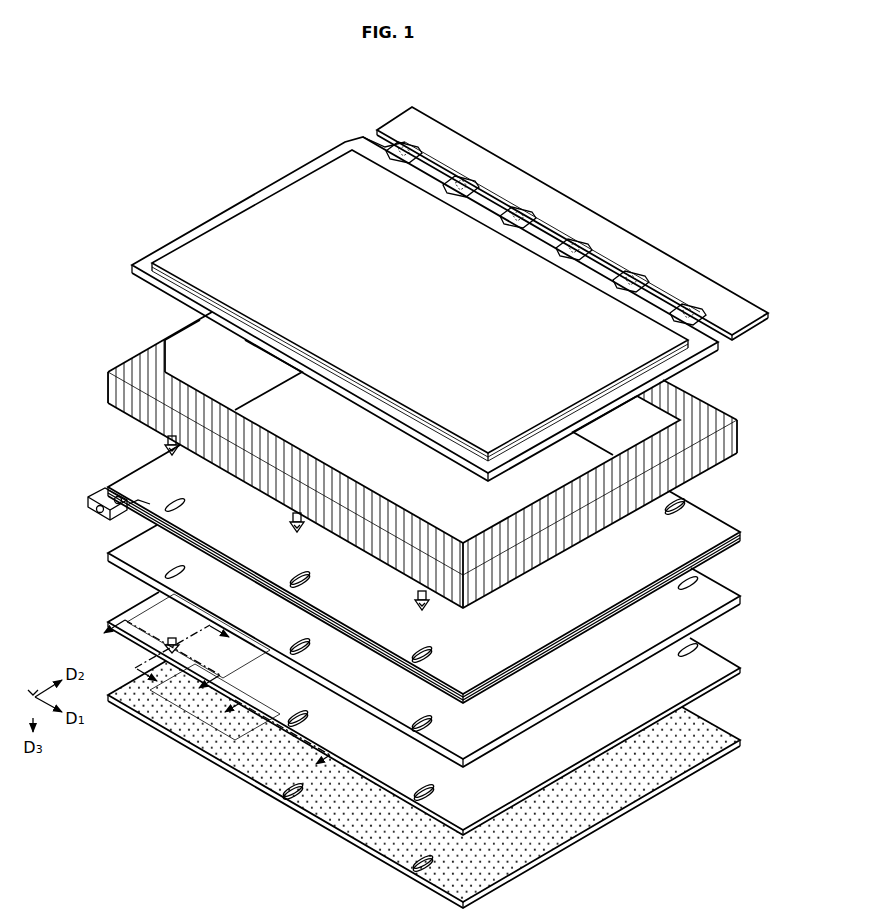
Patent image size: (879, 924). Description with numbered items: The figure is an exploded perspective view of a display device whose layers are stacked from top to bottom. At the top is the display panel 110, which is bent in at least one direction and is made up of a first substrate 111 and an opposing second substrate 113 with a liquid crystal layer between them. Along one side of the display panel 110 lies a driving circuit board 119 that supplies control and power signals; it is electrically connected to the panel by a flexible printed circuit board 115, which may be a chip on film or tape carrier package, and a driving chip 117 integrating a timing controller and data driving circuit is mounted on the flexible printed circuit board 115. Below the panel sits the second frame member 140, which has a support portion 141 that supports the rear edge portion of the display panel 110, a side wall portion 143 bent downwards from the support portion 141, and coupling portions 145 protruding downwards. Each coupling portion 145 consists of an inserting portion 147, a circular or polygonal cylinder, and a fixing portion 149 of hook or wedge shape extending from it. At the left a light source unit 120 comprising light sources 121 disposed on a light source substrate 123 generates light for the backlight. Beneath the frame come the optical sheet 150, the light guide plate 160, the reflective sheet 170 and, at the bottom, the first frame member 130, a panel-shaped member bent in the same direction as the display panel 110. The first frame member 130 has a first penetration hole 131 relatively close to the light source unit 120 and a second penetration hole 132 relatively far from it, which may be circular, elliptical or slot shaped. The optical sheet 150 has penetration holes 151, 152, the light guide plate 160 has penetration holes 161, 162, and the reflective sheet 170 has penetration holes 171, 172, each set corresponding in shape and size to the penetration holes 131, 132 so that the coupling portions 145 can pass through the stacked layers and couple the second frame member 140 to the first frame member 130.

The display panel 110 is at (399, 282).
The first substrate 111 is at (150, 284).
The second substrate 113 is at (150, 260).
The flexible printed circuit board 115 is at (388, 146).
The driving chip 117 is at (403, 146).
The driving circuit board 119 is at (425, 136).
The light source unit 120 is at (75, 514).
The light source 121 is at (96, 503).
The light source substrate 123 is at (92, 524).
The first frame member 130 is at (445, 784).
The first penetration hole 131 is at (167, 724).
The second penetration hole 132 is at (290, 797).
The second frame member 140 is at (395, 461).
The support portion 141 is at (148, 357).
The side wall portion 143 is at (120, 393).
The coupling portion 145 is at (238, 514).
The inserting portion 147 is at (166, 441).
The fixing portion 149 is at (168, 452).
The optical sheet 150 is at (446, 574).
The penetration hole 151 is at (178, 503).
The penetration hole 152 is at (304, 577).
The light guide plate 160 is at (445, 646).
The penetration hole 161 is at (178, 572).
The penetration hole 162 is at (304, 647).
The reflective sheet 170 is at (429, 713).
The penetration hole 171 is at (172, 641).
The penetration hole 172 is at (302, 716).